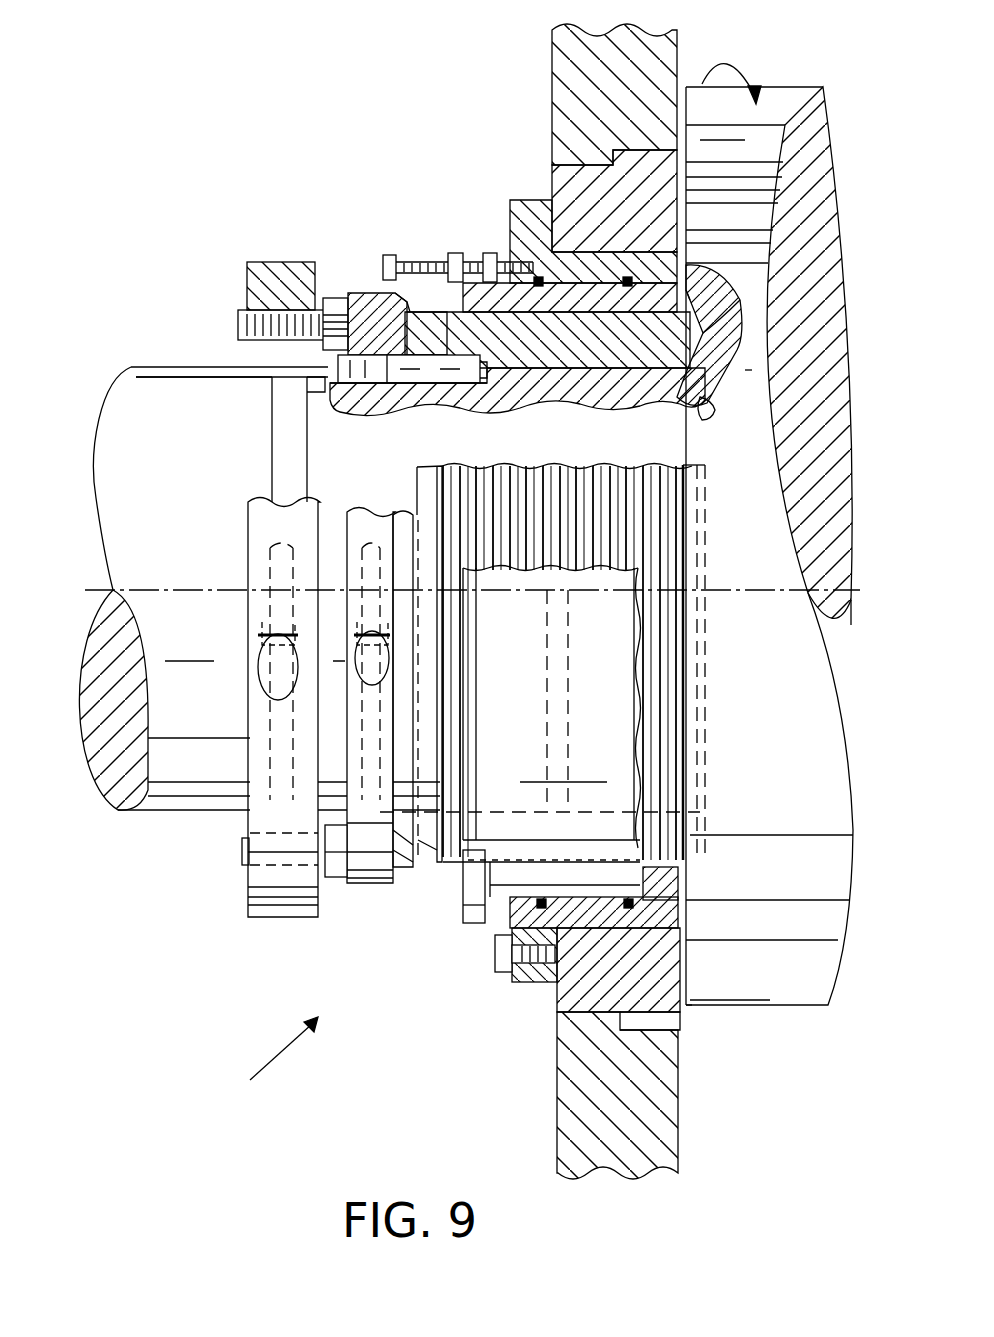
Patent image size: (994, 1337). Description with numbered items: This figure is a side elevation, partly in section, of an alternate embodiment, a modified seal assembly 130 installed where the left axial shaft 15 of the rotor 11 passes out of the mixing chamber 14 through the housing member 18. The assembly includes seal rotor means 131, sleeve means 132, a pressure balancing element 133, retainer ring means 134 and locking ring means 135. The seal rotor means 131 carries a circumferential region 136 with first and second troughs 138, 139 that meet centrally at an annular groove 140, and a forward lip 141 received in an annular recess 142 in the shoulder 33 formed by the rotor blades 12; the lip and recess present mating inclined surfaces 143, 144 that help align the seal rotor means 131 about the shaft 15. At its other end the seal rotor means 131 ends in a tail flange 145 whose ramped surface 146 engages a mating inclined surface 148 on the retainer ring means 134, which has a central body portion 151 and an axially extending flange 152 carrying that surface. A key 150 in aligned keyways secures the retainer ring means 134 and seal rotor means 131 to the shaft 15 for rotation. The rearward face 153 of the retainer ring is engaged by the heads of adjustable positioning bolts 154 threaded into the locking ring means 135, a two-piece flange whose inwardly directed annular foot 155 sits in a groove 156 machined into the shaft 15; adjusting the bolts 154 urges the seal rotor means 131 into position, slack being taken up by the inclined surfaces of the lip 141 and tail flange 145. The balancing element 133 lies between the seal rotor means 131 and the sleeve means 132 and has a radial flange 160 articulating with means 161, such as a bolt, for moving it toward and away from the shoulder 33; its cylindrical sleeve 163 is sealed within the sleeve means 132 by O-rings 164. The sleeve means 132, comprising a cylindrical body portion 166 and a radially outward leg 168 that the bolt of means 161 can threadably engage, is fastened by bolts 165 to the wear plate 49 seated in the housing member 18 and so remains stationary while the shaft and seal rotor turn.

The rotor 11 is at (754, 669).
The rotor blade 12 is at (823, 105).
The mixing chamber 14 is at (742, 1127).
The left axial shaft 15 is at (164, 482).
The housing member 18 is at (672, 52).
The shoulder 33 is at (680, 1020).
The wear plate 49 is at (585, 1012).
The seal assembly 130 is at (280, 1063).
The seal rotor means 131 is at (598, 392).
The sleeve means 132 is at (511, 195).
The pressure balancing element 133 is at (692, 288).
The retainer ring means 134 is at (362, 278).
The locking ring means 135 is at (257, 250).
The circumferential region 136 is at (785, 215).
The first trough 138 is at (633, 515).
The second trough 139 is at (497, 482).
The annular groove 140 is at (556, 485).
The forward lip 141 is at (700, 340).
The annular recess 142 is at (706, 402).
The inclined surface 143 is at (730, 302).
The inclined surface 144 is at (690, 345).
The tail flange 145 is at (428, 390).
The inclined surface 146 is at (420, 310).
The inclined surface 148 is at (483, 390).
The key 150 is at (322, 385).
The central body portion 151 is at (380, 388).
The axially extending flange 152 is at (433, 276).
The rearward face 153 is at (340, 300).
The adjustable positioning bolt 154 is at (240, 318).
The annular foot 155 is at (290, 378).
The groove 156 is at (287, 472).
The radial flange 160 is at (458, 266).
The means for movement 161 is at (380, 256).
The cylindrical sleeve 163 is at (560, 302).
The O-ring 164 is at (548, 250).
The bolt 165 is at (498, 968).
The cylindrical body portion 166 is at (682, 910).
The leg 168 is at (528, 990).